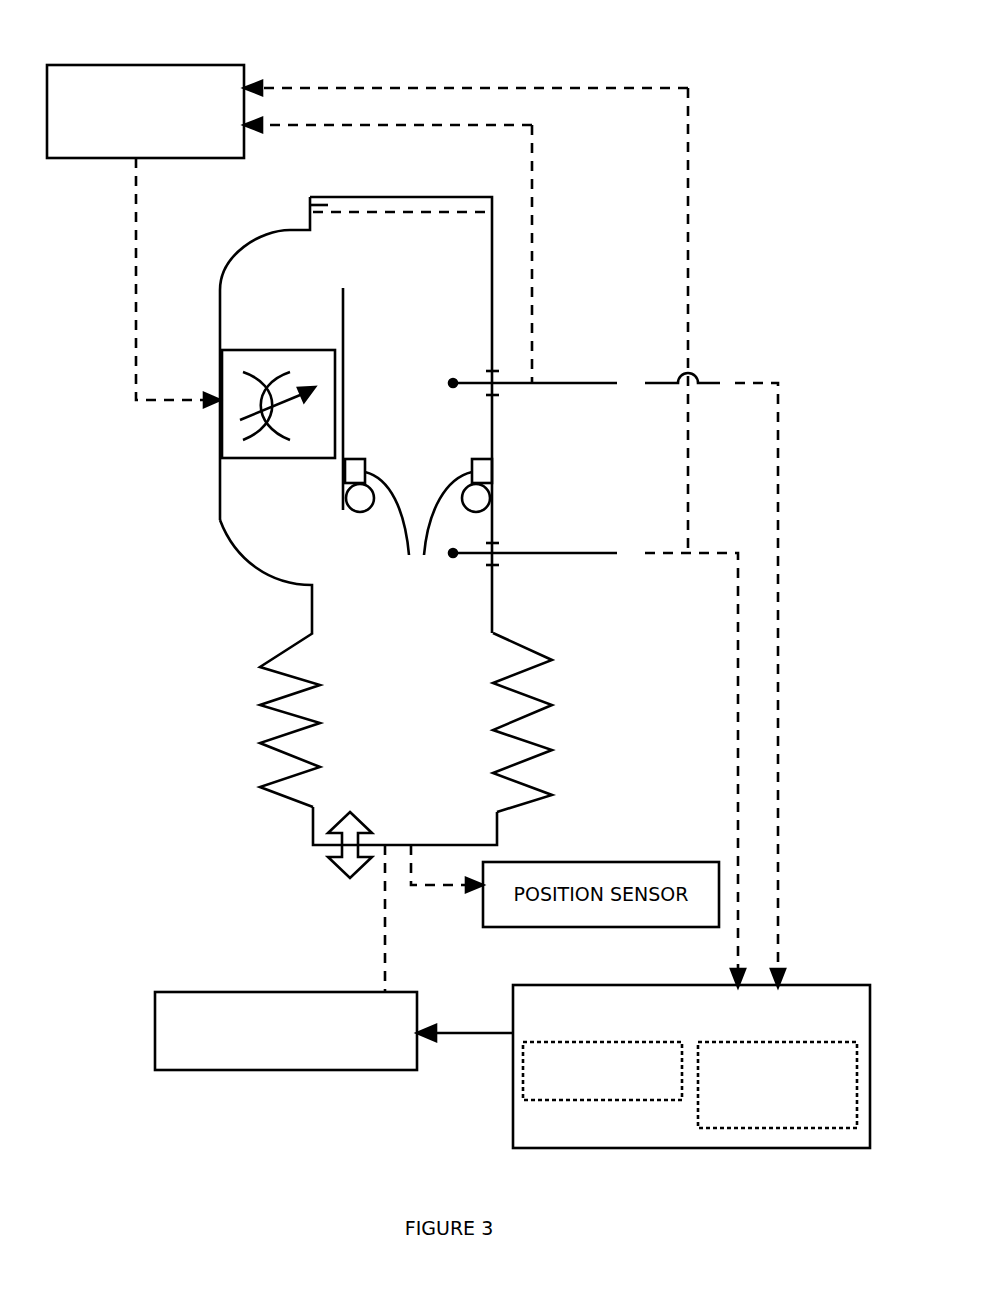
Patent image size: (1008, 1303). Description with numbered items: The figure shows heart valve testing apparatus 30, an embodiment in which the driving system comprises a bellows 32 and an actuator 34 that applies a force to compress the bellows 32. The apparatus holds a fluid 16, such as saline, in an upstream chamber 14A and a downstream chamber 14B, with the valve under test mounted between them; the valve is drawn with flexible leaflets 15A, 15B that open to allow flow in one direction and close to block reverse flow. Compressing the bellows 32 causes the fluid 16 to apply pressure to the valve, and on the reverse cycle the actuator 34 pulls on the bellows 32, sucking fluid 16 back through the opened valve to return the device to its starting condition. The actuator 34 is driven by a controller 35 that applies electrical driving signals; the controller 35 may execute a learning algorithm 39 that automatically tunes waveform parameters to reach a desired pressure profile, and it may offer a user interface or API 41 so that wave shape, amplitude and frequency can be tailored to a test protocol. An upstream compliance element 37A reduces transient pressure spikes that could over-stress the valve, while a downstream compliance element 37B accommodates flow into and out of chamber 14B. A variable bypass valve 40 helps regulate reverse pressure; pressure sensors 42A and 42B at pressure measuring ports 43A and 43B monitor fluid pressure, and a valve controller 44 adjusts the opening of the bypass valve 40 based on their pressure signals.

The valve controller 44 is at (95, 65).
The apparatus 30 is at (768, 96).
The downstream compliance element 37B is at (310, 205).
The chamber 14B is at (274, 268).
The fluid 16 is at (400, 507).
The variable bypass valve 40 is at (320, 350).
The pressure sensor 42B is at (453, 383).
The pressure measuring port 43B is at (492, 395).
The second damper blade 15B is at (372, 470).
The upstream compliance element 37A is at (358, 505).
The flexible leaflets 15A is at (402, 520).
The pressure measuring port 43A is at (492, 543).
The pressure sensor 42A is at (453, 556).
The chamber 14A is at (274, 552).
The bellows 32 is at (234, 688).
The actuator 34 is at (188, 1070).
The controller 35 is at (531, 1148).
The learning algorithm 39 is at (523, 1073).
The user interface or API 41 is at (838, 1128).